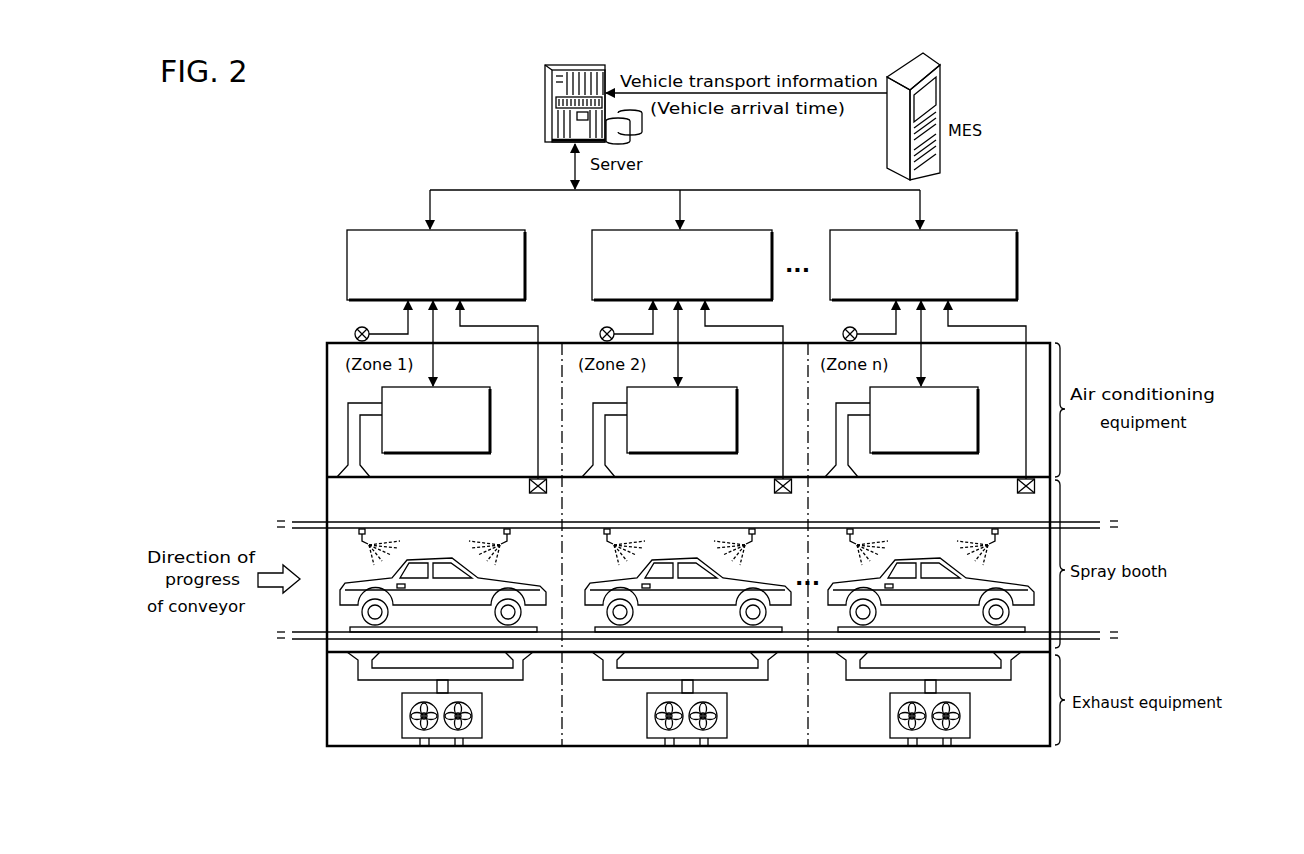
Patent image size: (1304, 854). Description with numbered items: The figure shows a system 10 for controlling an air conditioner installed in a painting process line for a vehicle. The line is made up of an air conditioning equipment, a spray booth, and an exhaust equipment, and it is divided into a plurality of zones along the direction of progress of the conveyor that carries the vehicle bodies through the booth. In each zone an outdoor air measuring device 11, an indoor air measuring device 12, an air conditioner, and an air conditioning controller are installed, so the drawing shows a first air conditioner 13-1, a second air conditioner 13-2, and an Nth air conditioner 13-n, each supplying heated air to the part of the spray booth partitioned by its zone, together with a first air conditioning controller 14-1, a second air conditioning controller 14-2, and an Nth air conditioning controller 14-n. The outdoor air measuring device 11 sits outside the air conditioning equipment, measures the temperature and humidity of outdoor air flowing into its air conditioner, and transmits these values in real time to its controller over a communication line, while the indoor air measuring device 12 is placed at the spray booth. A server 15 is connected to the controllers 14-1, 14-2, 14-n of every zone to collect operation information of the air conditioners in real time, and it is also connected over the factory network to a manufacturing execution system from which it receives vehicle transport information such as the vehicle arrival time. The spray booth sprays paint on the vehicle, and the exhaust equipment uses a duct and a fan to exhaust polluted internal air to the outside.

The system for controlling the air conditioner 10 is at (347, 67).
The outdoor air measuring device 11 is at (355, 331).
The indoor air measuring device 12 is at (529, 493).
The first air conditioner 13-1 is at (486, 373).
The second air conditioner 13-2 is at (726, 373).
The Nth air conditioner 13-n is at (966, 373).
The first air conditioning controller 14-1 is at (493, 218).
The second air conditioning controller 14-2 is at (740, 218).
The Nth air conditioning controller 14-n is at (983, 218).
The server 15 is at (545, 108).